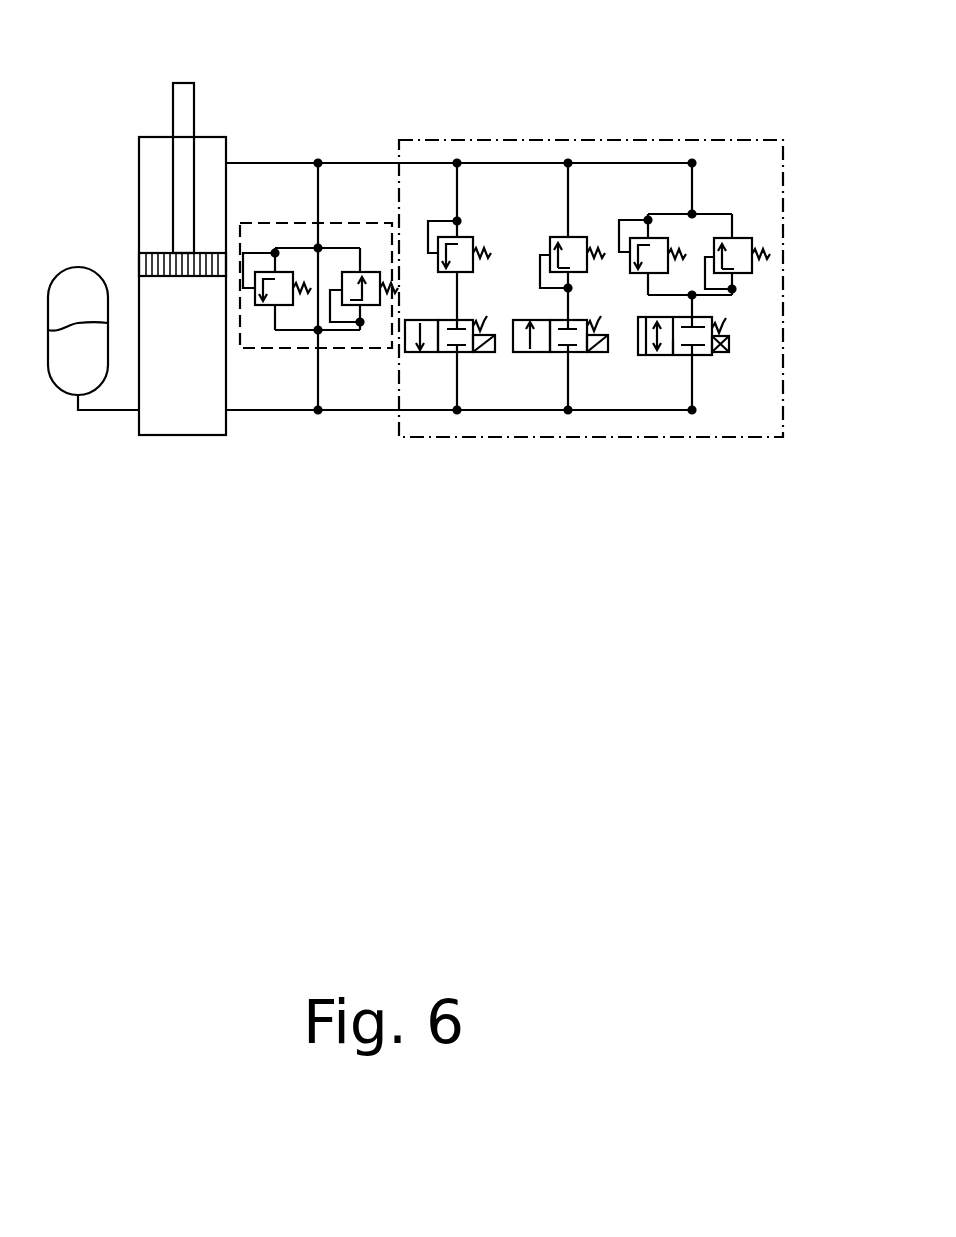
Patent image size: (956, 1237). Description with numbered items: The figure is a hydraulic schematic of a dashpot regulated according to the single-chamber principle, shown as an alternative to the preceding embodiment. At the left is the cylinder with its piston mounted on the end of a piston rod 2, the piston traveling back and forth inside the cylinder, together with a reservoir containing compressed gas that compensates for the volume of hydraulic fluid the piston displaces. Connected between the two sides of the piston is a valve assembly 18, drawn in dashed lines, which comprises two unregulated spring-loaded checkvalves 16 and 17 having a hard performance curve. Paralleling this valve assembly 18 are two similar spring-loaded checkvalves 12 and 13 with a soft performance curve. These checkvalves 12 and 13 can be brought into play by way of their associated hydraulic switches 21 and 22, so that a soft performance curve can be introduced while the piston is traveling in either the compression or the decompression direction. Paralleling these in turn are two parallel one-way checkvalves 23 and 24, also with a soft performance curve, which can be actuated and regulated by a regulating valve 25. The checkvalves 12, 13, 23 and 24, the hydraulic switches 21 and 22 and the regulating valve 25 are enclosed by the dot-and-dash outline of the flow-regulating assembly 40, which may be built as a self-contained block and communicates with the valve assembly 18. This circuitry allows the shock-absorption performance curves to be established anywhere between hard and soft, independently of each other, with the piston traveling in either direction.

The piston rod 2 is at (183, 100).
The spring-loaded checkvalve 12 is at (472, 237).
The spring-loaded checkvalve 13 is at (583, 237).
The unregulated spring-loaded checkvalve 16 is at (278, 272).
The unregulated spring-loaded checkvalve 17 is at (363, 275).
The valve assembly 18 is at (290, 352).
The hydraulic switch 21 is at (445, 354).
The hydraulic switch 22 is at (555, 354).
The one-way checkvalve 23 is at (652, 240).
The one-way checkvalve 24 is at (740, 240).
The regulating valve 25 is at (680, 357).
The flow-regulating assembly 40 is at (780, 440).